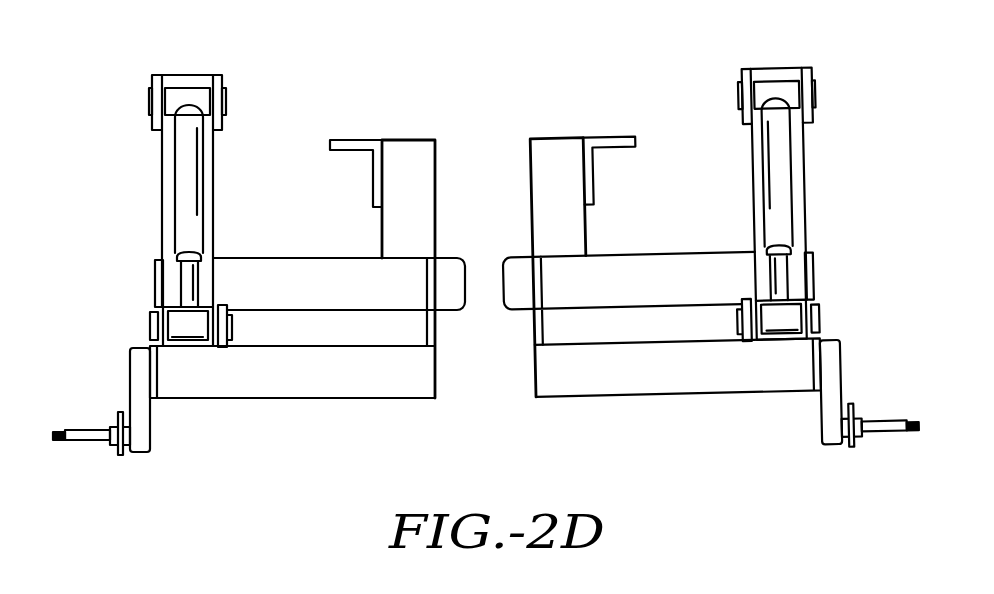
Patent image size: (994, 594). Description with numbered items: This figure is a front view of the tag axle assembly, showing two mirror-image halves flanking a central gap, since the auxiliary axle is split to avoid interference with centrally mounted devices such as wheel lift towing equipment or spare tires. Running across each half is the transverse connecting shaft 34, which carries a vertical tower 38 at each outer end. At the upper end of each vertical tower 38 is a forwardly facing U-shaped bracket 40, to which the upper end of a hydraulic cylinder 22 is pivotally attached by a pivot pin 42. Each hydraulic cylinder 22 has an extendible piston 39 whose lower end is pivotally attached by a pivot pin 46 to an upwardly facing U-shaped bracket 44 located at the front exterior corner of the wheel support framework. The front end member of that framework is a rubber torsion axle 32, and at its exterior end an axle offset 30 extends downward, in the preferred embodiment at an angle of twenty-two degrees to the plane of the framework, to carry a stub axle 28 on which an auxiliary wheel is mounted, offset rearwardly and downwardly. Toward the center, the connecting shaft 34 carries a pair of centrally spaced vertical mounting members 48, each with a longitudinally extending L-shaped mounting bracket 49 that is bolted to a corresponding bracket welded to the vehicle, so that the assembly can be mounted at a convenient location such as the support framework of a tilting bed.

The hydraulic cylinder 22 is at (204, 172).
The stub axle 28 is at (89, 432).
The axle offset 30 is at (136, 362).
The rubber torsion axle 32 is at (275, 400).
The transverse connecting shaft 34 is at (292, 258).
The vertical tower 38 is at (162, 172).
The extendible piston 39 is at (173, 288).
The forwardly facing U-shaped bracket 40 is at (222, 78).
The pivot pin 42 is at (227, 103).
The upwardly facing U-shaped bracket 44 is at (807, 300).
The pivot pin 46 is at (818, 318).
The vertical mounting member 48 is at (532, 162).
The L-shaped mounting bracket 49 is at (357, 140).